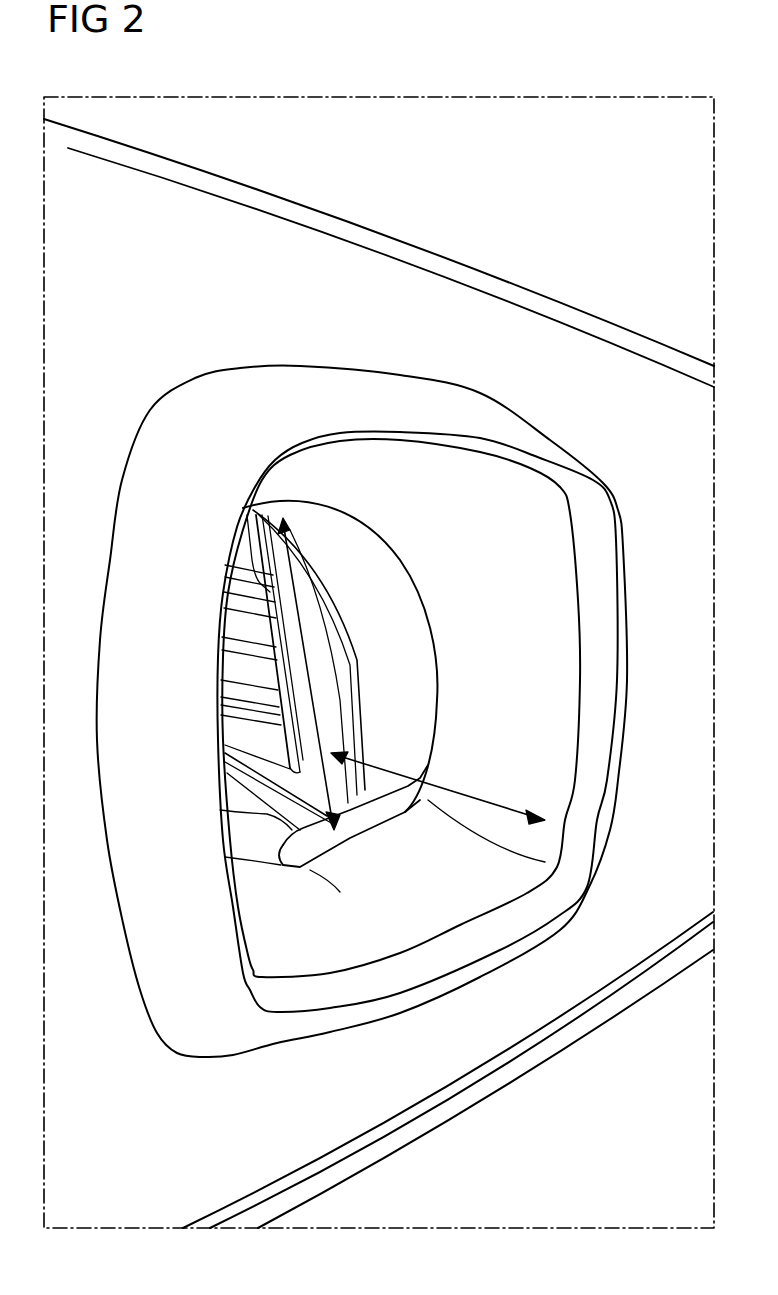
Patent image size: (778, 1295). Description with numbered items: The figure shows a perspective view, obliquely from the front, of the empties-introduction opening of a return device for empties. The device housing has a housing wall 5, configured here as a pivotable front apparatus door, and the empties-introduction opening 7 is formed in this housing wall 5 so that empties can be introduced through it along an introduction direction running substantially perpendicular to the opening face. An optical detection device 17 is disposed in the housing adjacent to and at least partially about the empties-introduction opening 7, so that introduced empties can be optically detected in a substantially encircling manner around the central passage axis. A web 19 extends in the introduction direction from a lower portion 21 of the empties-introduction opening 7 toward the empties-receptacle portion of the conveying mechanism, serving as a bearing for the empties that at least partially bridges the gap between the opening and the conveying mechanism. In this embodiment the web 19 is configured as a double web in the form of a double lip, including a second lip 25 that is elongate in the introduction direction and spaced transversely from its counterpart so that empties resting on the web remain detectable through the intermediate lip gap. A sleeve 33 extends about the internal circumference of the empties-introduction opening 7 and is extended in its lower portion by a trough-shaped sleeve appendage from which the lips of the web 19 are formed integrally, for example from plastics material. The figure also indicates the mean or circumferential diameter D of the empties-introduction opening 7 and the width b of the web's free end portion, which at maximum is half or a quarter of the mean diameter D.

The housing wall 5 is at (515, 318).
The empties-introduction opening 7 is at (483, 468).
The optical detection device 17 is at (399, 620).
The web 19 is at (237, 690).
The second lip 25 is at (220, 810).
The lower portion 21 is at (293, 877).
The sleeve 33 is at (313, 890).
The mean diameter D is at (312, 672).
The width b is at (438, 779).